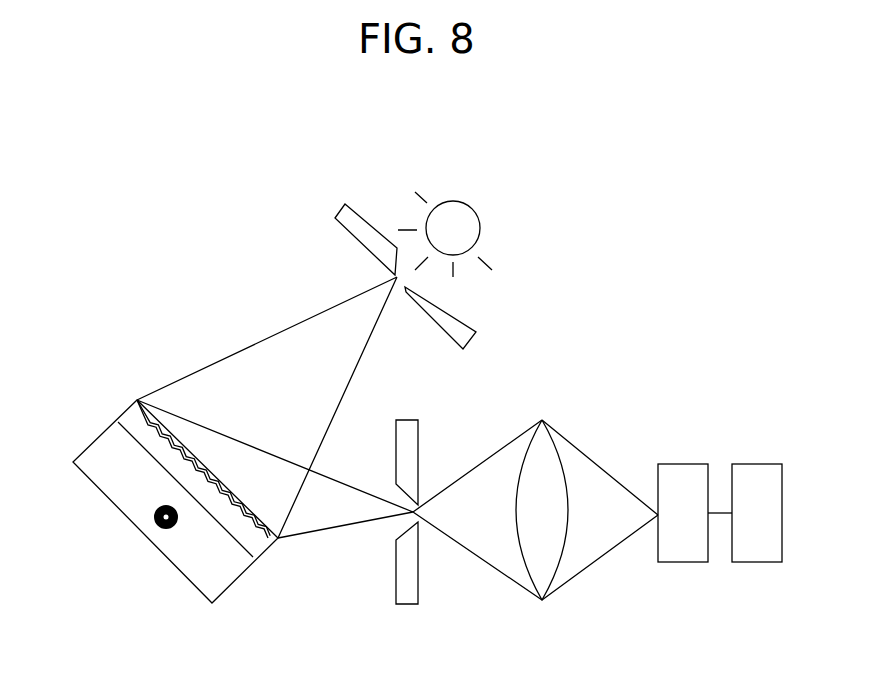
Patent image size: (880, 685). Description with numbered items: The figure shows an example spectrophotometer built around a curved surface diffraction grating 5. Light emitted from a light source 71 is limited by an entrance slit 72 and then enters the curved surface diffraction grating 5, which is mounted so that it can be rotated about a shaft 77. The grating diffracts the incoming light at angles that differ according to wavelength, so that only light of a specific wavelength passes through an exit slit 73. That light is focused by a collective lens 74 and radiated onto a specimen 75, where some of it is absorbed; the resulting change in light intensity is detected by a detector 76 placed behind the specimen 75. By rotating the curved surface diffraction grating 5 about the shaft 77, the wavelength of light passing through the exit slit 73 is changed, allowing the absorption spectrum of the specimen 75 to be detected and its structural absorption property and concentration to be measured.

The curved surface diffraction grating 5 is at (67, 436).
The light source 71 is at (455, 225).
The entrance slit 72 is at (360, 222).
The exit slit 73 is at (403, 595).
The collective lens 74 is at (543, 602).
The specimen 75 is at (680, 473).
The detector 76 is at (763, 473).
The shaft 77 is at (153, 527).